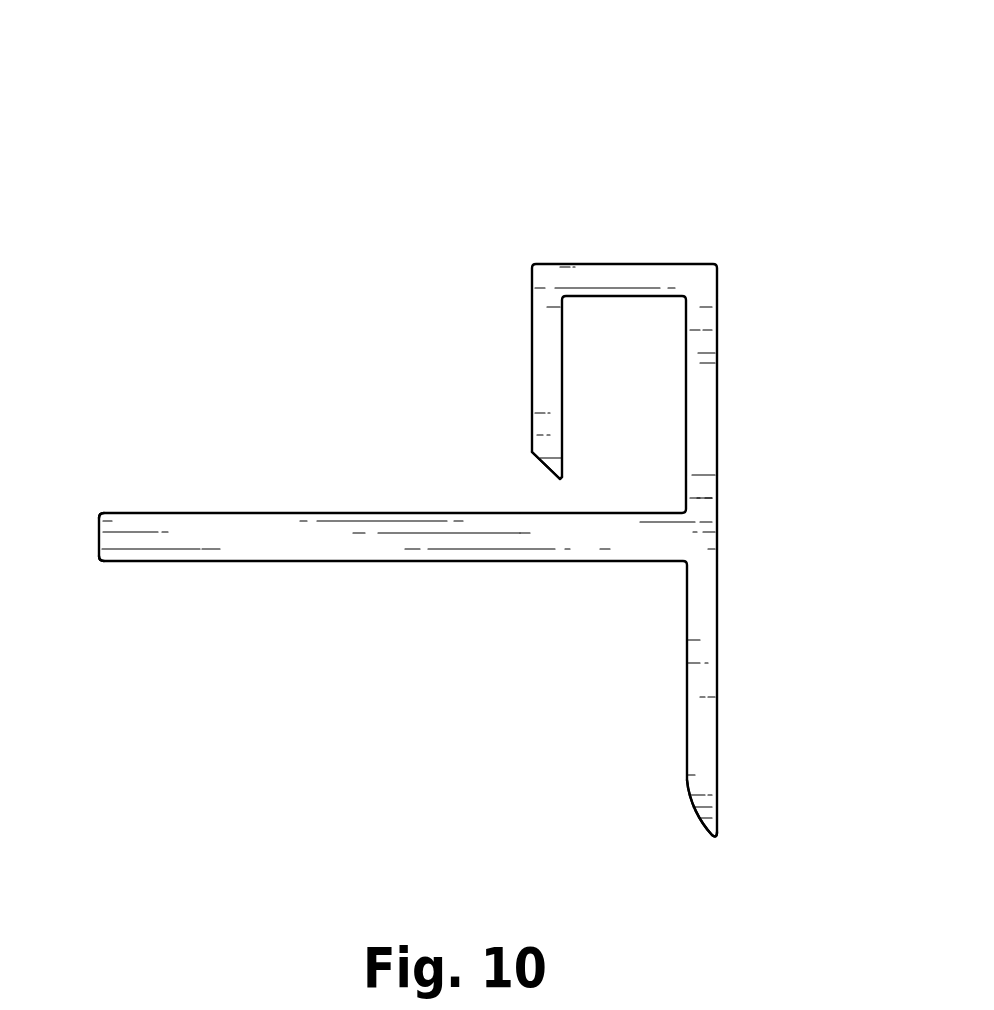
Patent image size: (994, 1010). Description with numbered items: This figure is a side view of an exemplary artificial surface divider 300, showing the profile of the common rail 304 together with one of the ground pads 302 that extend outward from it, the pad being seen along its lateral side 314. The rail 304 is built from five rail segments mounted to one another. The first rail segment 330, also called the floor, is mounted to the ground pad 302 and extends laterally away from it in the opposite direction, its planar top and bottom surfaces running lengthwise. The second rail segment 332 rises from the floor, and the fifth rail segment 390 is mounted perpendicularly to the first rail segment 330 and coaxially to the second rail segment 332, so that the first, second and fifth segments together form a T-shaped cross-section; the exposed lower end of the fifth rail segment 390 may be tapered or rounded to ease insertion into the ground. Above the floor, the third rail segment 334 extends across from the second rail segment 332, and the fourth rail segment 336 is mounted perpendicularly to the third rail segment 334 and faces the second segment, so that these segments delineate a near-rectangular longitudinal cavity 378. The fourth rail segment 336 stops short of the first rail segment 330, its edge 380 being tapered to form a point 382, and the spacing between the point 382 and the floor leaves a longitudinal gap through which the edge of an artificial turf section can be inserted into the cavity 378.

The artificial surface divider 300 is at (718, 97).
The ground pad 302 is at (217, 522).
The common rail 304 is at (600, 628).
The lateral side 314 is at (145, 540).
The first rail segment 330 is at (490, 543).
The second rail segment 332 is at (707, 398).
The third rail segment 334 is at (628, 275).
The fourth rail segment 336 is at (542, 362).
The longitudinal cavity 378 is at (643, 327).
The edge of fourth rail segment 380 is at (537, 453).
The point 382 is at (570, 478).
The fifth rail segment 390 is at (695, 688).